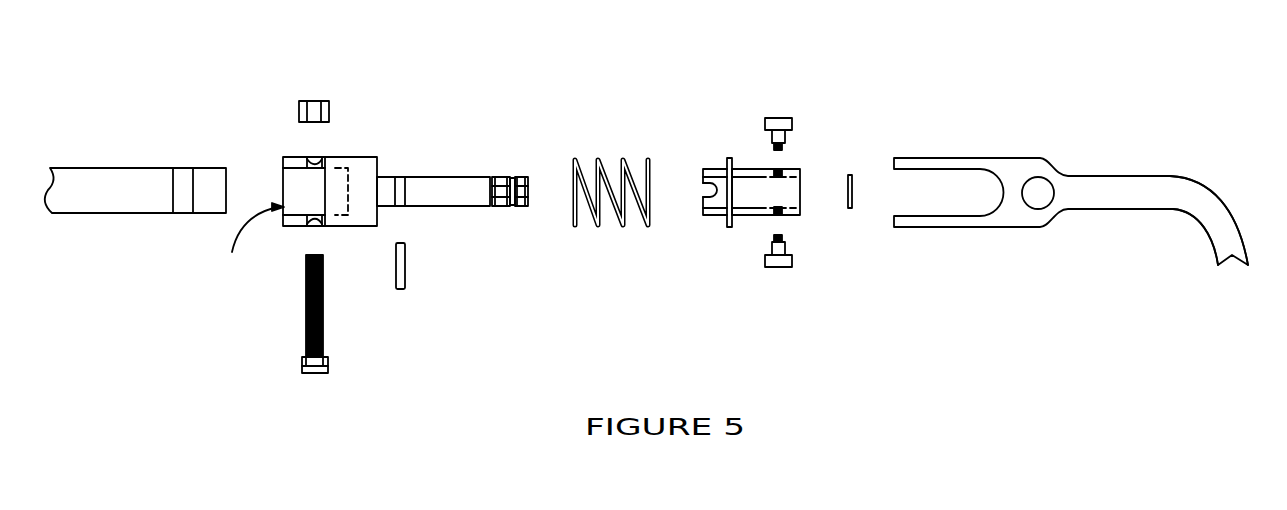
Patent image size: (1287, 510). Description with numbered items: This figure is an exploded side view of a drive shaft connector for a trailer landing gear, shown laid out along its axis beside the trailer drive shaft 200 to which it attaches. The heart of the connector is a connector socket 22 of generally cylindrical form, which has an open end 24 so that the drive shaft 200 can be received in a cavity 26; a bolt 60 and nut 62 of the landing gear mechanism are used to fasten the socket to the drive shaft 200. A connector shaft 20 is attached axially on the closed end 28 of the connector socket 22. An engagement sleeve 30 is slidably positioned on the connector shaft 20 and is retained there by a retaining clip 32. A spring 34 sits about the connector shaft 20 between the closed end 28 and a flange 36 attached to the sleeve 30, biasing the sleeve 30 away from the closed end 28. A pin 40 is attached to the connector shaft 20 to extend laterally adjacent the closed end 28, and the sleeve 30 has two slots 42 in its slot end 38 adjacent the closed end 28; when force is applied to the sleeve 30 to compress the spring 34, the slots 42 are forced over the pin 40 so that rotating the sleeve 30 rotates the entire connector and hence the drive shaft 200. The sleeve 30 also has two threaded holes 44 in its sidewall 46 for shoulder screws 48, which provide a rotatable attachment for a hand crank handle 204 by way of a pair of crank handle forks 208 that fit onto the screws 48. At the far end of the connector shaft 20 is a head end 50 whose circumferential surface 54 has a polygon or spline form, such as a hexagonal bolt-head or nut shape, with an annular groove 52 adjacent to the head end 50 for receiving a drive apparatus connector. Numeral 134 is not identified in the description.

The trailer drive shaft 200 is at (110, 168).
The connector shaft 20 is at (448, 177).
The connector socket 22 is at (335, 190).
The open end 24 is at (250, 240).
The cavity 26 is at (283, 160).
The closed end 28 is at (377, 160).
The engagement sleeve 30 is at (753, 215).
The retaining clip 32 is at (851, 176).
The spring 34 is at (624, 226).
The flange 36 is at (728, 227).
The slot end 38 is at (706, 215).
The pin 40 is at (405, 268).
The slots 42 is at (707, 191).
The threaded holes 44 is at (780, 170).
The sidewall 46 is at (752, 169).
The shoulder screws 48 is at (780, 118).
The head end 50 is at (527, 183).
The annular groove 52 is at (510, 206).
The circumferential surface 54 is at (513, 178).
The bolt 60 is at (306, 300).
The nut 62 is at (305, 100).
The hole 134 is at (1035, 185).
The hand crank handle 204 is at (1113, 176).
The crank handle forks 208 is at (933, 158).